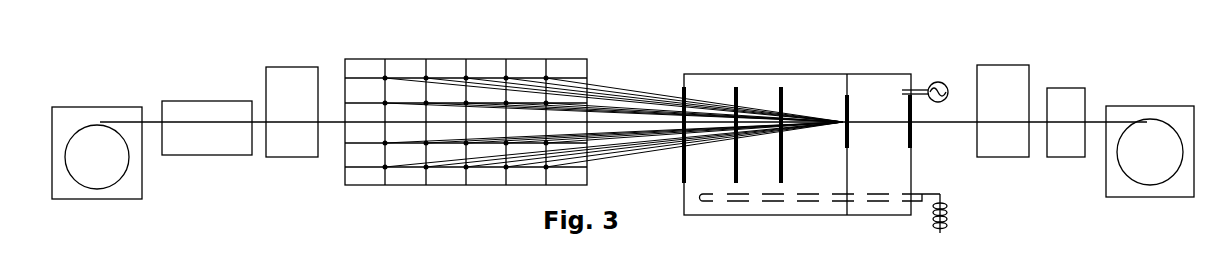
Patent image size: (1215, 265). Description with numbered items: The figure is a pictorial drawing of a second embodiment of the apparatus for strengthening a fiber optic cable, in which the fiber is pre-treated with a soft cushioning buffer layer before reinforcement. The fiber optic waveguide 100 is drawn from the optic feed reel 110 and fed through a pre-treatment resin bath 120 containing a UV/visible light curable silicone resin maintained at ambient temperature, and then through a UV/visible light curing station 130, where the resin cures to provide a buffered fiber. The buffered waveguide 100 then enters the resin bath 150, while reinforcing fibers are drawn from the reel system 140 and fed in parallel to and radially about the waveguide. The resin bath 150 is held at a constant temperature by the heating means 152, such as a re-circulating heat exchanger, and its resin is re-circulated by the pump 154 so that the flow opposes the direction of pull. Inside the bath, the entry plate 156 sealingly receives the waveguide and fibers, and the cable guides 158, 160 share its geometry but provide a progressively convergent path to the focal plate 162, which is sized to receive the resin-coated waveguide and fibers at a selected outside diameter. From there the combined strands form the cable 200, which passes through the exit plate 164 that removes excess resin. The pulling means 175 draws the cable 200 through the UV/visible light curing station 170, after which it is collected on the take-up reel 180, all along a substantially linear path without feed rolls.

The fiber optic waveguide 100 is at (151, 123).
The optic feed reel 110 is at (97, 107).
The pre-treatment resin bath 120 is at (203, 101).
The UV/visible light curing station 130 is at (287, 67).
The reel system 140 is at (483, 59).
The resin bath 150 is at (817, 74).
The heating means 152 is at (941, 224).
The pump 154 is at (938, 82).
The entry plate 156 is at (683, 85).
The cable guide 158 is at (734, 87).
The cable guide 160 is at (780, 87).
The focal plate 162 is at (848, 95).
The exit plate 164 is at (913, 145).
The UV/visible light curing station 170 is at (1000, 65).
The pulling means 175 is at (1064, 88).
The take-up reel 180 is at (1147, 106).
The cable 200 is at (966, 123).